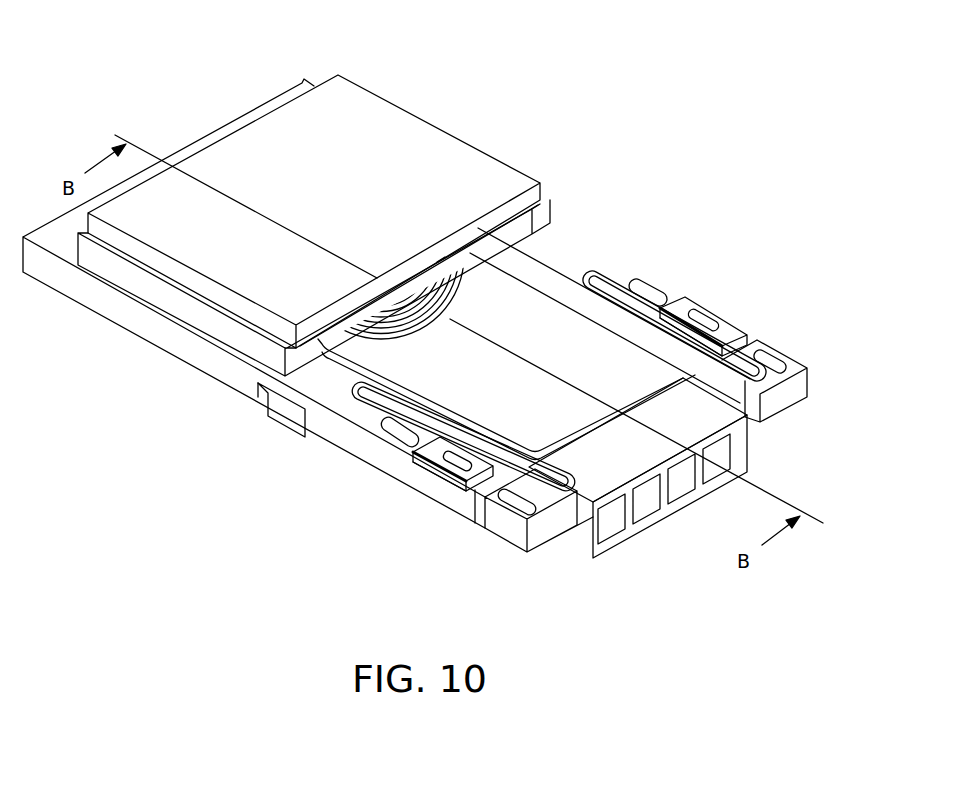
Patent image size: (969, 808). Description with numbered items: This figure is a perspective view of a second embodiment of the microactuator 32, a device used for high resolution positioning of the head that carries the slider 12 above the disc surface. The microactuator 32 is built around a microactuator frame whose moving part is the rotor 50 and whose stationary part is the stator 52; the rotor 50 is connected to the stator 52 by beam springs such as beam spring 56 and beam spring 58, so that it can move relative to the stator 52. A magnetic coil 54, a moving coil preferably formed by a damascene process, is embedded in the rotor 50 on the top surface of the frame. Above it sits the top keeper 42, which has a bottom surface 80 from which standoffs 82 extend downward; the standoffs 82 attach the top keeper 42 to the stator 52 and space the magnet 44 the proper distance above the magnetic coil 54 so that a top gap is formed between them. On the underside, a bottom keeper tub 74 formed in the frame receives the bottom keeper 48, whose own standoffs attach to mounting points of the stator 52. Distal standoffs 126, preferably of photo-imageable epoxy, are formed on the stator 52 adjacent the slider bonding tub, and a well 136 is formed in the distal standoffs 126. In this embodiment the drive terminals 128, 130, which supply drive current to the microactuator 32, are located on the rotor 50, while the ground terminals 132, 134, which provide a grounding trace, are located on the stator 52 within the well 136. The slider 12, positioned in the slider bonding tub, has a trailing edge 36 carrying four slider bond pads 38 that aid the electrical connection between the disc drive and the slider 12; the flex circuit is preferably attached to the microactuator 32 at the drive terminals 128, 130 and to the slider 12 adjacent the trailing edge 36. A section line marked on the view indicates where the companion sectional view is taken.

The slider 12 is at (677, 423).
The microactuator 32 is at (140, 104).
The trailing edge 36 is at (740, 437).
The slider bond pads 38 is at (676, 475).
The top keeper 42 is at (343, 120).
The magnet 44 is at (437, 267).
The bottom keeper 48 is at (288, 413).
The rotor 50 is at (570, 336).
The stator 52 is at (575, 258).
The magnetic coil 54 is at (440, 300).
The beam spring 56 is at (413, 420).
The beam spring 58 is at (622, 297).
The bottom keeper tub 74 is at (261, 395).
The bottom surface 80 is at (340, 297).
The standoffs 82 is at (200, 312).
The distal standoffs 126 is at (730, 333).
The drive terminal 128 is at (520, 503).
The drive terminal 130 is at (767, 360).
The ground terminal 132 is at (445, 458).
The ground terminal 134 is at (707, 323).
The well 136 is at (694, 308).